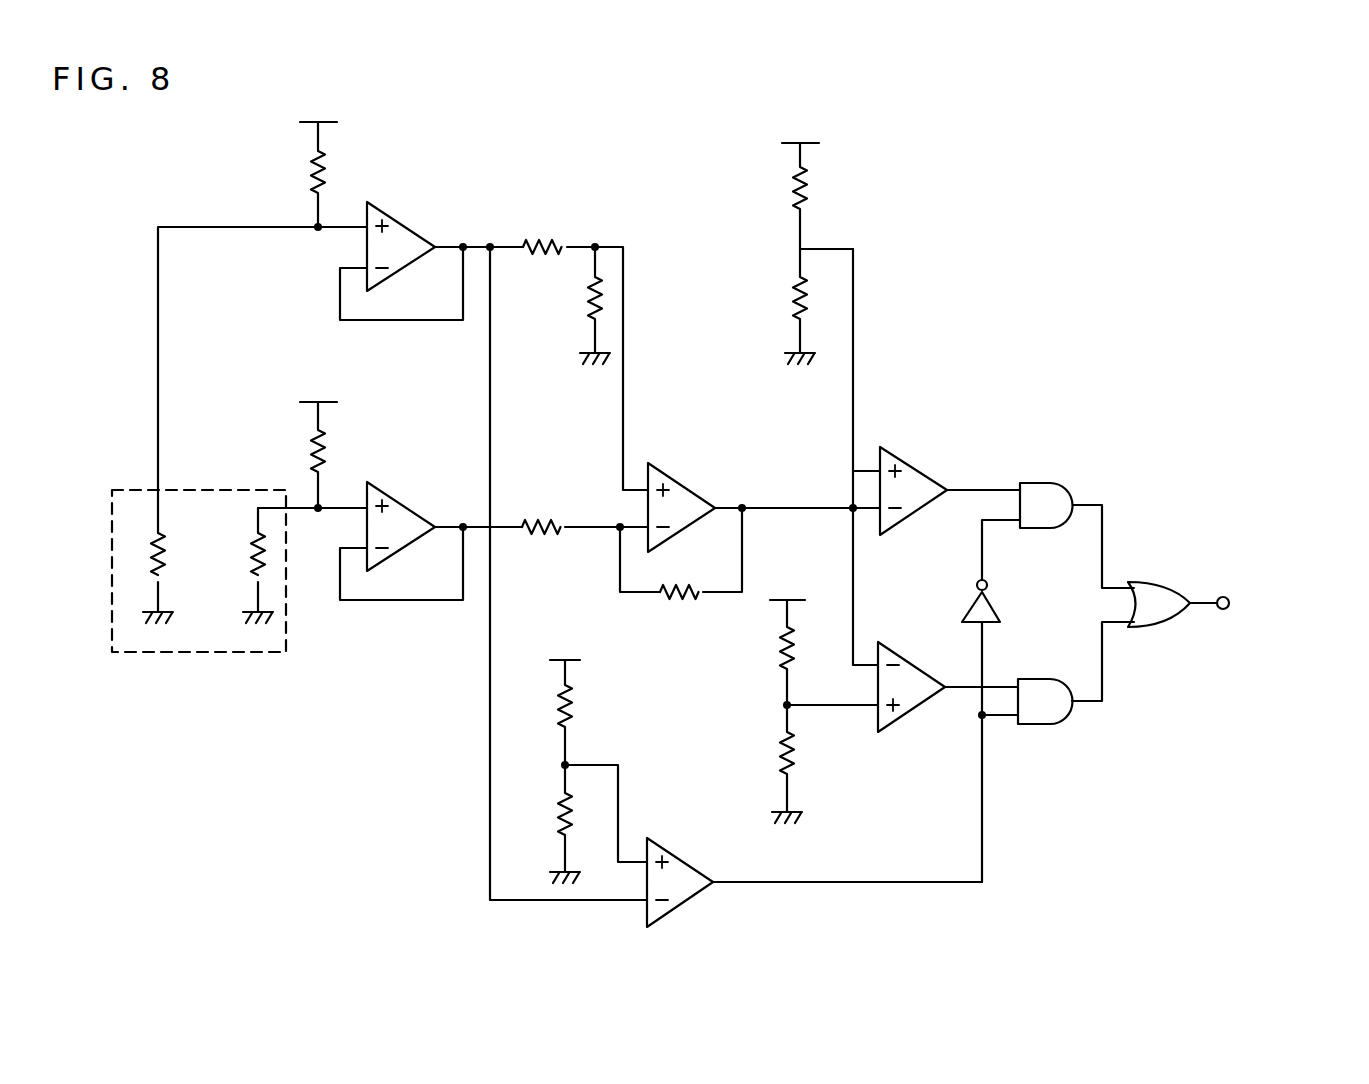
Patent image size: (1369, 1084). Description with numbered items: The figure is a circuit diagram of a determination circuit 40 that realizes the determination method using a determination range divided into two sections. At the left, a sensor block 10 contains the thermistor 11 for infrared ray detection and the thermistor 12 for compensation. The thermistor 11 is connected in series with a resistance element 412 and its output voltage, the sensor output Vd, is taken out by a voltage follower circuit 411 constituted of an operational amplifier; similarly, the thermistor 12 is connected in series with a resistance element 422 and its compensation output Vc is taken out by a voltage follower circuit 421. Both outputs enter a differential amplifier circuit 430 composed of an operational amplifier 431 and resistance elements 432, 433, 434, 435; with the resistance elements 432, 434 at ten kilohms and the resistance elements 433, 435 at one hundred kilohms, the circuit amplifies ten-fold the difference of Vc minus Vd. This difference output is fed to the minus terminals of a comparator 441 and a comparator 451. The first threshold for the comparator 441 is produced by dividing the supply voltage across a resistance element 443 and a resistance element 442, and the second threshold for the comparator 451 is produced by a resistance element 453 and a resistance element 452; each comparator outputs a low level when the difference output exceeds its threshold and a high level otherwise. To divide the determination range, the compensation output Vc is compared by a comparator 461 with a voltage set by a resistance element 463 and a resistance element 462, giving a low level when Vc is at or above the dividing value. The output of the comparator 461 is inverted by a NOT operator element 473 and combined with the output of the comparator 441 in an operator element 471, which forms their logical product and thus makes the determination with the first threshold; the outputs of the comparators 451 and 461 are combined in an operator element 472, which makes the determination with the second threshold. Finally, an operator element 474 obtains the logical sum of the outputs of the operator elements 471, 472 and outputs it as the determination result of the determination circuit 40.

The sensor unit 10 is at (193, 652).
The thermistor for infrared ray detection 11 is at (247, 553).
The thermistor for compensation 12 is at (172, 562).
The determination circuit 40 is at (1064, 221).
The voltage follower circuit 411 is at (402, 500).
The resistance element 412 is at (308, 447).
The voltage follower circuit 421 is at (402, 220).
The resistance element 422 is at (309, 167).
The differential amplifier circuit 430 is at (641, 366).
The operational amplifier 431 is at (680, 478).
The resistance element 432 is at (552, 515).
The resistance element 433 is at (672, 602).
The resistance element 434 is at (552, 233).
The resistance element 435 is at (582, 293).
The comparator 441 is at (918, 462).
The resistance element 442 is at (788, 294).
The resistance element 443 is at (788, 189).
The comparator 451 is at (915, 658).
The resistance element 452 is at (774, 751).
The resistance element 453 is at (774, 658).
The comparator 461 is at (682, 853).
The resistance element 462 is at (553, 815).
The resistance element 463 is at (577, 705).
The operator element 471 is at (1040, 480).
The operator element 472 is at (1037, 727).
The operator element 473 is at (997, 605).
The operator element 474 is at (1150, 577).